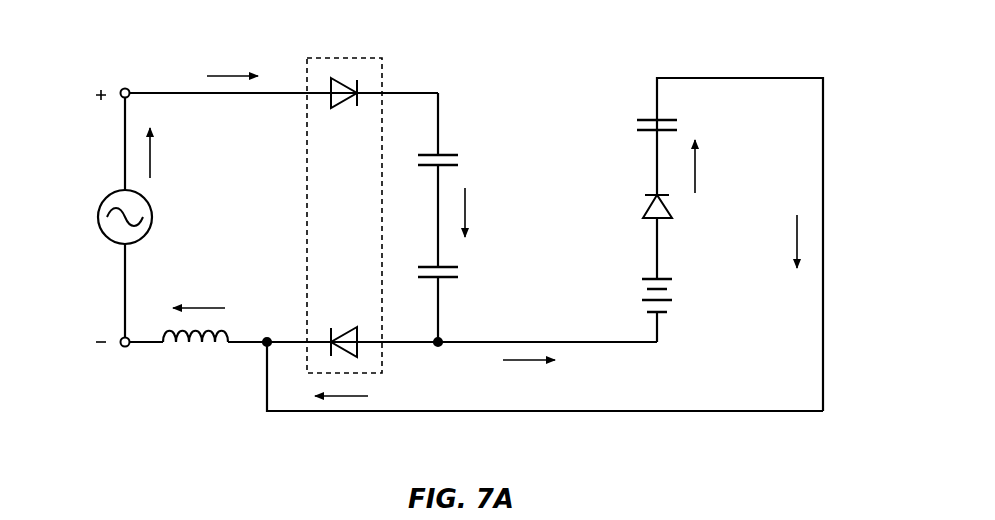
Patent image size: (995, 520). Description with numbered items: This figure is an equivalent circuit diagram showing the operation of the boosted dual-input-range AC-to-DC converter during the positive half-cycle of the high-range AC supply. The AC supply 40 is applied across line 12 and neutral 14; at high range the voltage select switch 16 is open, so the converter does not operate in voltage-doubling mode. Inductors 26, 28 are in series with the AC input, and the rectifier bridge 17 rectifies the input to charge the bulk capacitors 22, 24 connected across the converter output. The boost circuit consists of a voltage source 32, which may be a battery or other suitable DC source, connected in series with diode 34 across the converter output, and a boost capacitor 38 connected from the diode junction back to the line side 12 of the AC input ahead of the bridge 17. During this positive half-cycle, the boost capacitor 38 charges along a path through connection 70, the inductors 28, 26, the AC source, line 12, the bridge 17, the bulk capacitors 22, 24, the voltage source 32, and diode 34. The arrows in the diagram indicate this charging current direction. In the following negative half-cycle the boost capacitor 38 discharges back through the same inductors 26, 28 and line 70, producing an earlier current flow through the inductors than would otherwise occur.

The line 12 is at (122, 90).
The neutral 14 is at (122, 339).
The voltage select switch 16 is at (462, 414).
The rectifier bridge 17 is at (343, 56).
The bulk capacitor 22 is at (460, 164).
The bulk capacitor 24 is at (460, 269).
The inductor 26 is at (171, 369).
The inductor 28 is at (218, 346).
The voltage source 32 is at (672, 291).
The diode 34 is at (642, 201).
The boost capacitor 38 is at (636, 122).
The AC supply 40 is at (106, 187).
The connection 70 is at (823, 243).